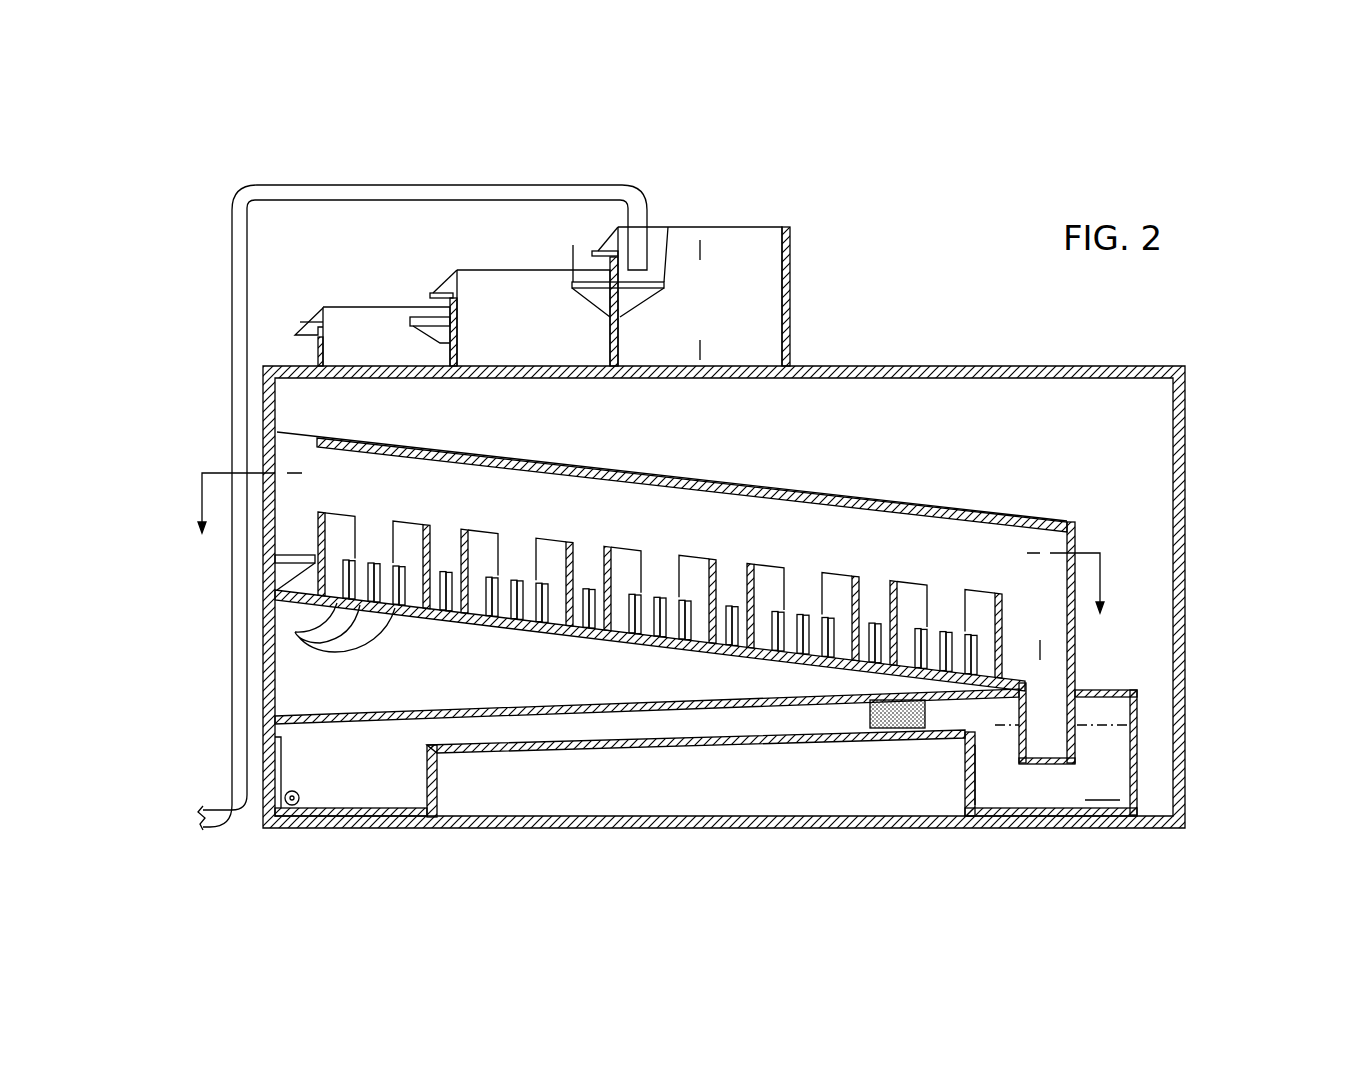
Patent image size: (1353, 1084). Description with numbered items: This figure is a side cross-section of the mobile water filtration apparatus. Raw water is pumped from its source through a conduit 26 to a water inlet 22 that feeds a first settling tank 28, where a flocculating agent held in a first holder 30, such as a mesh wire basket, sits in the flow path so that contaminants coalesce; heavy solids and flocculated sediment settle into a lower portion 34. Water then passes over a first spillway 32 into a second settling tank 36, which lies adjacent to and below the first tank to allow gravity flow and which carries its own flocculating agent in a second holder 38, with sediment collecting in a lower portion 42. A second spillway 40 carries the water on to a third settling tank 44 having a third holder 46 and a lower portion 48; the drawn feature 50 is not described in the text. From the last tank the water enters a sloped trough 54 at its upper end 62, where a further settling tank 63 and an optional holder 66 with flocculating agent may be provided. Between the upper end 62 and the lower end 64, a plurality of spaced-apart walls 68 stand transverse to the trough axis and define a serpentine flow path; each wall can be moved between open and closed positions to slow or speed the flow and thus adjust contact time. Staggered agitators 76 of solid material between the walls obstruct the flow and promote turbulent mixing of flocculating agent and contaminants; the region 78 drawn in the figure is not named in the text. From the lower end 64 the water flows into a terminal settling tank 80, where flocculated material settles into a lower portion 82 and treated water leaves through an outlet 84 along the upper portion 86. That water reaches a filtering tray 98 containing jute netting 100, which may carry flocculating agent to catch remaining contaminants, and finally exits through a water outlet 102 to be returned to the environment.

The water inlet 22 is at (641, 193).
The conduit 26 is at (232, 765).
The first settling tank 28 is at (782, 222).
The first holder 30 is at (661, 280).
The first spillway 32 is at (600, 250).
The lower portion 34 is at (735, 352).
The second settling tank 36 is at (447, 287).
The second holder 38 is at (574, 283).
The second spillway 40 is at (418, 317).
The lower portion 42 is at (556, 347).
The third settling tank 44 is at (323, 300).
The third holder 46 is at (335, 303).
The lower portion 48 is at (367, 350).
The inlet nozzle 50 is at (310, 317).
The sloped trough 54 is at (1071, 522).
The upper end 62 is at (300, 455).
The further settling tank 63 is at (292, 540).
The lower end 64 is at (1042, 572).
The holder 66 is at (300, 590).
The spaced-apart walls 68 is at (463, 620).
The agitators 76 is at (295, 632).
The chamber 78 is at (1040, 650).
The terminal settling tank 80 is at (1135, 733).
The lower portion 82 is at (1077, 793).
The outlet 84 is at (970, 713).
The upper portion 86 is at (995, 712).
The filtering tray 98 is at (652, 724).
The jute netting 100 is at (897, 725).
The water outlet 102 is at (295, 804).